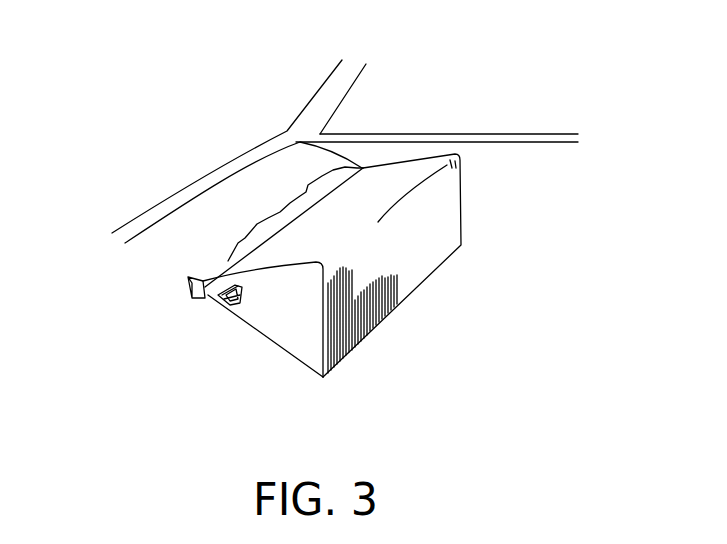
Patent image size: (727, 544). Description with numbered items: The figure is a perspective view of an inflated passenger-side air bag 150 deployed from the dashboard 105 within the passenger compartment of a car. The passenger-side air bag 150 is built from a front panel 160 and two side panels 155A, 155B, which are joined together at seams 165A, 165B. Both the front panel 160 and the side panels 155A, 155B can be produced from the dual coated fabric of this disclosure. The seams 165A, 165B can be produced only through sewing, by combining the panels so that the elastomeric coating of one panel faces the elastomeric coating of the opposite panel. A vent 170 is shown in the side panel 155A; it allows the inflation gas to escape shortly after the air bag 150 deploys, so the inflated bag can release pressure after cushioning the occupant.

The dashboard 105 is at (255, 193).
The passenger-side air bag 150 is at (327, 384).
The side panel 155A is at (277, 318).
The side panel 155B is at (483, 160).
The front panel 160 is at (402, 260).
The seam 165A is at (228, 261).
The seam 165B is at (413, 158).
The vent 170 is at (230, 303).